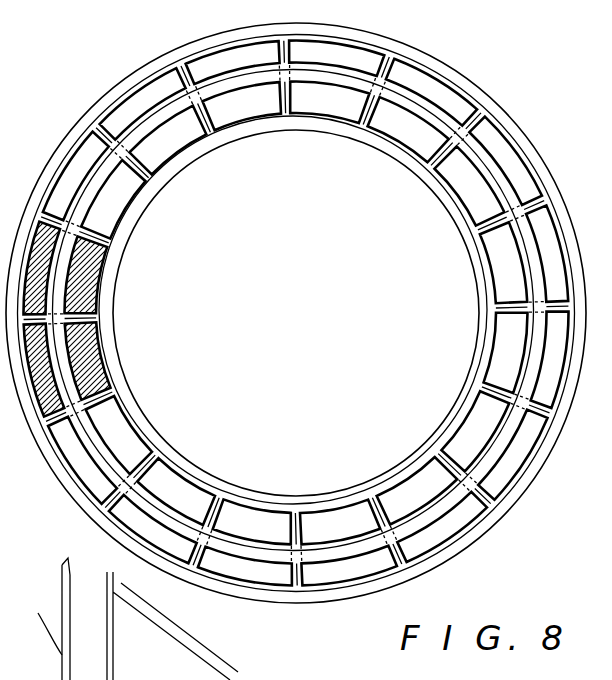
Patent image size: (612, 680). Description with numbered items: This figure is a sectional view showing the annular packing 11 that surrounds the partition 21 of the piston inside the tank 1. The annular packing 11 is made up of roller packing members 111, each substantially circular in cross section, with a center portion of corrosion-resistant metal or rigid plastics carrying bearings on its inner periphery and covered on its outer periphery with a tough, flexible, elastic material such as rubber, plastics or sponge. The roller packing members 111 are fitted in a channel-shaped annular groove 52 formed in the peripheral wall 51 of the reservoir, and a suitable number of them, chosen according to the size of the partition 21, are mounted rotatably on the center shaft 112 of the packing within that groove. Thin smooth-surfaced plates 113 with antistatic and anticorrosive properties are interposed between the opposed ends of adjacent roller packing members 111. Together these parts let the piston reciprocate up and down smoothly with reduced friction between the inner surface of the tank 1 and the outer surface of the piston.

The tank 1 is at (463, 73).
The annular packing 11 is at (510, 133).
The roller packing members 111 is at (82, 255).
The center shaft 112 is at (480, 158).
The thin smooth-surfaced plates 113 is at (100, 385).
The annular groove 52 is at (111, 275).
The partition 21 is at (322, 387).
The peripheral wall 51 is at (62, 615).